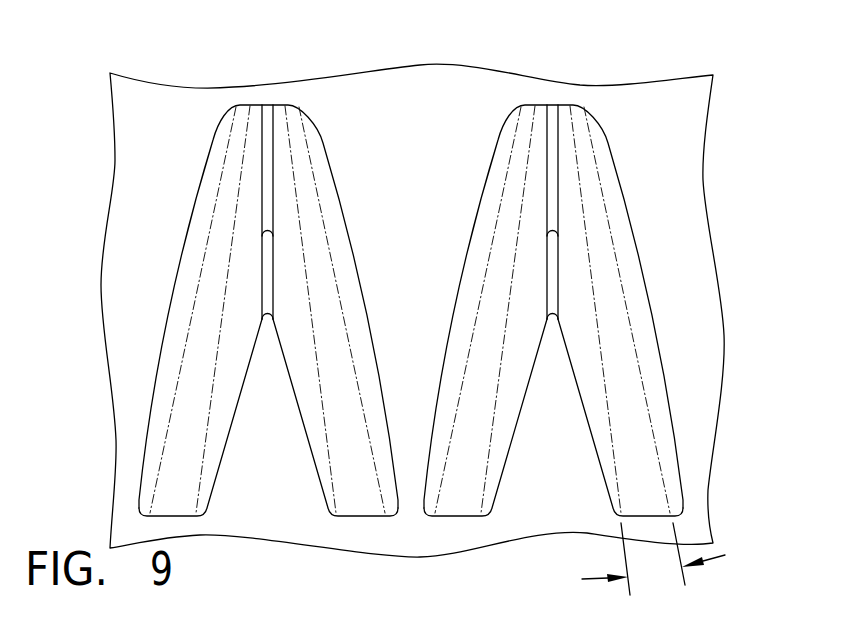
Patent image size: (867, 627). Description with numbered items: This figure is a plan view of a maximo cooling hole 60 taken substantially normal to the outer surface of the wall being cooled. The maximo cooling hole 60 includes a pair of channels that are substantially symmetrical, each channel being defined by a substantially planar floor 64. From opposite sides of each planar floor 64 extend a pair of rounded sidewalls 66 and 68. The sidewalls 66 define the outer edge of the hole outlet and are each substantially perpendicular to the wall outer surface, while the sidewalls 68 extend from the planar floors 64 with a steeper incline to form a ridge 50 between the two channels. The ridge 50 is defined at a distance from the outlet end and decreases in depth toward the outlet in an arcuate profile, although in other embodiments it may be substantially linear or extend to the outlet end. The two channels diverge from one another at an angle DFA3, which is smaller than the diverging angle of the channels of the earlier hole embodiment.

The maximo cooling hole 60 is at (158, 77).
The rounded sidewall 66 is at (361, 351).
The ridge 50 is at (263, 260).
The planar floor 64 is at (173, 495).
The rounded sidewall 68 is at (313, 450).
The diverging angle DFA3 is at (714, 558).